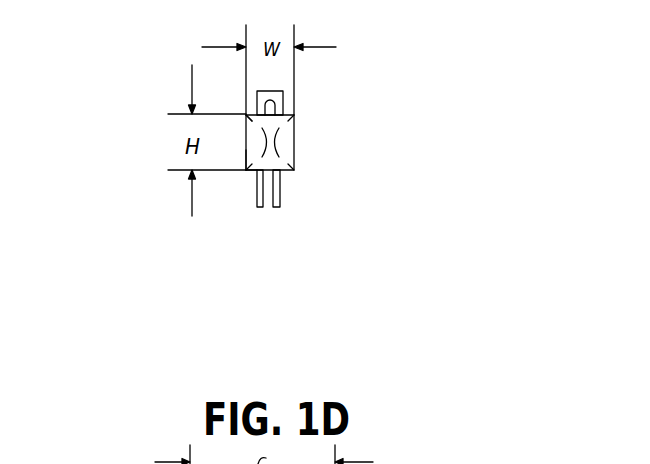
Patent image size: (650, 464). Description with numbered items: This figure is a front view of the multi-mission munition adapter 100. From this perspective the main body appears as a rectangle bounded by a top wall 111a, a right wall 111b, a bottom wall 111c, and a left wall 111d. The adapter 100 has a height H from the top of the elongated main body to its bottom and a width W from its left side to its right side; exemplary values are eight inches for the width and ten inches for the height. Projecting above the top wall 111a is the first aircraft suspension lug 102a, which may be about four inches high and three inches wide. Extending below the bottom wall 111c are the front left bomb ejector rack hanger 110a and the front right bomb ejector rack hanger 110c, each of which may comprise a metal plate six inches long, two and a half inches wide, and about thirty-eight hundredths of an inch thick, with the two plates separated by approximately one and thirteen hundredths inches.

The multi-mission munition adapter 100 is at (222, 185).
The first aircraft suspension lug 102a is at (280, 93).
The front left bomb ejector rack hanger 110a is at (280, 193).
The front right bomb ejector rack hanger 110c is at (257, 205).
The top wall 111a is at (248, 113).
The right wall 111b is at (245, 161).
The bottom wall 111c is at (258, 177).
The left wall 111d is at (294, 142).